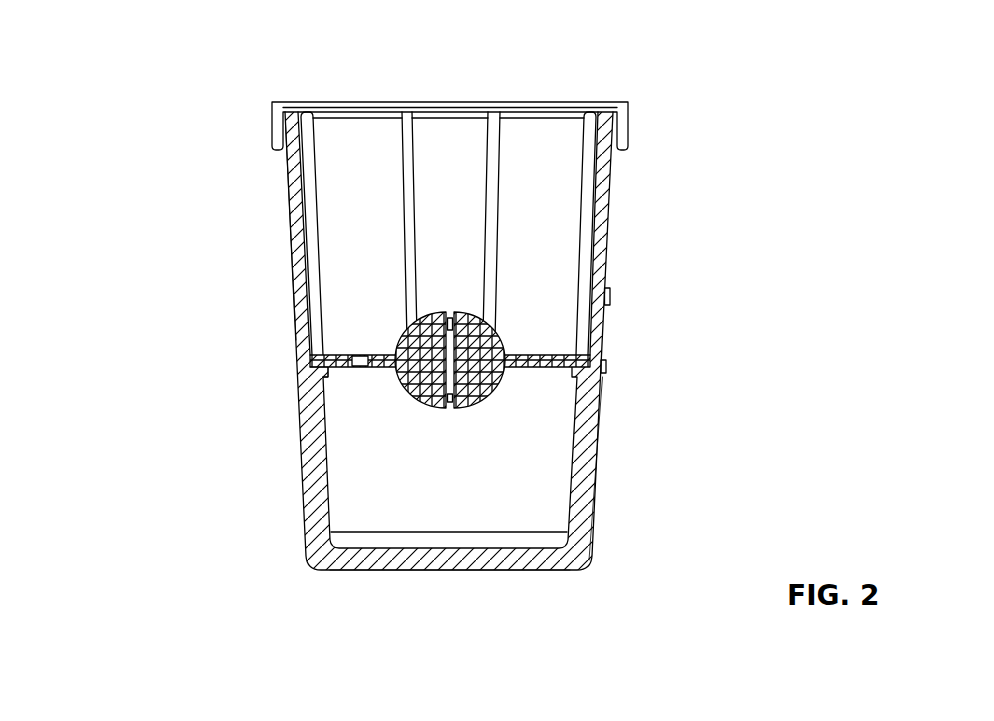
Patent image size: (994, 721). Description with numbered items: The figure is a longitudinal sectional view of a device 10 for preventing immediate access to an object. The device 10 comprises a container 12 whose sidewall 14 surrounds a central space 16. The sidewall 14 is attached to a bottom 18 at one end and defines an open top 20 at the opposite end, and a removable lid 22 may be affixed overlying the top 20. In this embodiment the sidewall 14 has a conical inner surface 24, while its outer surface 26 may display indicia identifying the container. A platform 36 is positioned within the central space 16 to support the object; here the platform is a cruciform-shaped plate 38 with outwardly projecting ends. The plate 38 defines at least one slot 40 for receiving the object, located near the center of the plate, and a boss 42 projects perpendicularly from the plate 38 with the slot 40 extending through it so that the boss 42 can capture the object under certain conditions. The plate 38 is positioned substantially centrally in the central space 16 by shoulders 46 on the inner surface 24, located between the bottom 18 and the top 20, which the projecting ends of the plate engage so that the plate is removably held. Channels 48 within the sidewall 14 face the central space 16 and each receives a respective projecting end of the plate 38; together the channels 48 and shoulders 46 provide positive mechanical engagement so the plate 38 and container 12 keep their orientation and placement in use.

The device 10 is at (116, 41).
The container 12 is at (587, 516).
The sidewall 14 is at (593, 396).
The central space 16 is at (460, 480).
The bottom 18 is at (525, 558).
The open top 20 is at (570, 128).
The removable lid 22 is at (280, 130).
The conical inner surface 24 is at (312, 131).
The outer surface 26 is at (288, 190).
The platform 36 is at (535, 355).
The cruciform-shaped plate 38 is at (594, 338).
The slot 40 is at (448, 322).
The boss 42 is at (468, 333).
The shoulder 46 is at (307, 374).
The channel 48 is at (453, 128).